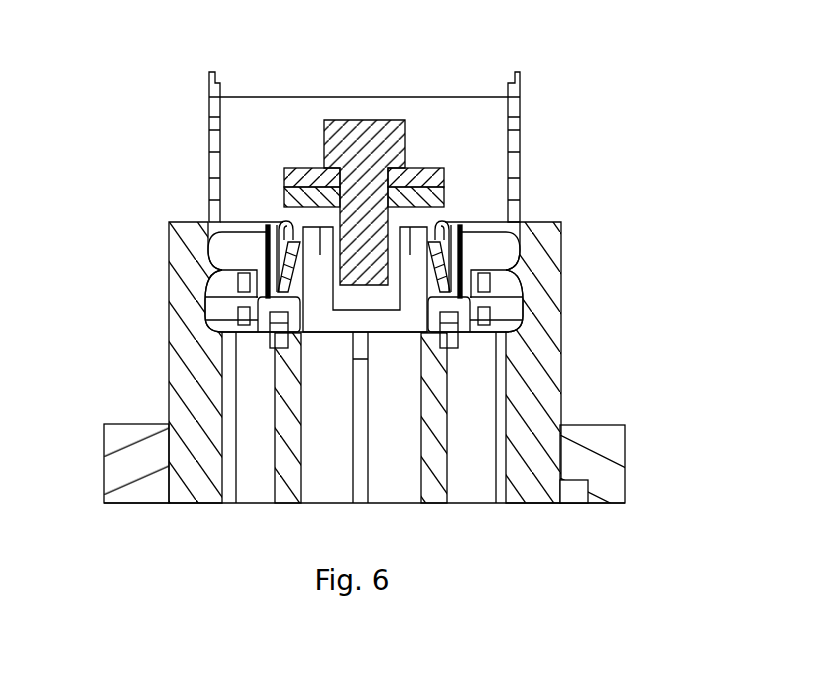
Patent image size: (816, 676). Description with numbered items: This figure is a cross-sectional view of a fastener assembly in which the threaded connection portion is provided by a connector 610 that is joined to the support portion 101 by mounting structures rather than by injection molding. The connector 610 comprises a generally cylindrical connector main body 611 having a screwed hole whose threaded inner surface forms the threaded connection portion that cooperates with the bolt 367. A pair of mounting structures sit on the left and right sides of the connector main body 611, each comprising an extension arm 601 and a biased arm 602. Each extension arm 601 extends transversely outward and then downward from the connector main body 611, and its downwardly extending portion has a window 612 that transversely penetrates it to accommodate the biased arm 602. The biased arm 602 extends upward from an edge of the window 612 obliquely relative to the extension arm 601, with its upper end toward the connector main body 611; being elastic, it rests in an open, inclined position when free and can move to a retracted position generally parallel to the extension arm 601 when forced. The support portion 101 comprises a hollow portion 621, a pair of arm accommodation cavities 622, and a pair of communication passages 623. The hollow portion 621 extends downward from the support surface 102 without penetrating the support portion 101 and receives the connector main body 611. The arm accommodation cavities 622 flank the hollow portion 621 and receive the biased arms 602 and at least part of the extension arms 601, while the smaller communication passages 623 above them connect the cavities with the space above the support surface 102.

The support portion 101 is at (208, 260).
The support surface 102 is at (250, 226).
The bolt 367 is at (372, 120).
The connector 610 is at (273, 188).
The extension arm 601 is at (290, 222).
The biased arm 602 is at (228, 262).
The connector main body 611 is at (257, 307).
The window 612 is at (490, 235).
The hollow portion 621 is at (365, 300).
The arm accommodation cavity 622 is at (462, 250).
The communication passage 623 is at (459, 226).